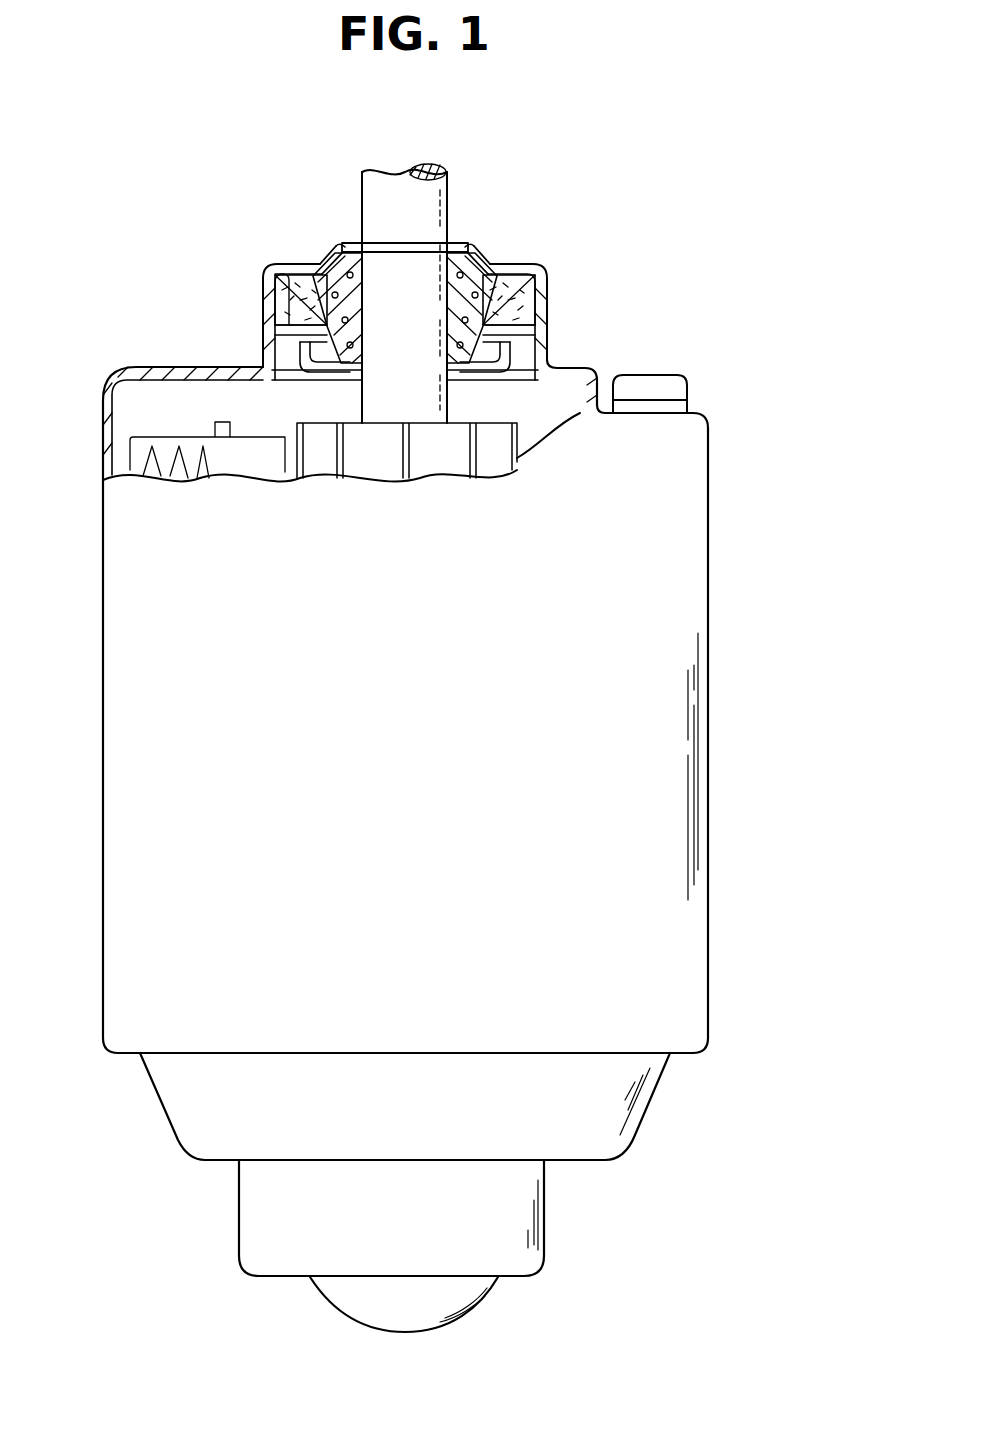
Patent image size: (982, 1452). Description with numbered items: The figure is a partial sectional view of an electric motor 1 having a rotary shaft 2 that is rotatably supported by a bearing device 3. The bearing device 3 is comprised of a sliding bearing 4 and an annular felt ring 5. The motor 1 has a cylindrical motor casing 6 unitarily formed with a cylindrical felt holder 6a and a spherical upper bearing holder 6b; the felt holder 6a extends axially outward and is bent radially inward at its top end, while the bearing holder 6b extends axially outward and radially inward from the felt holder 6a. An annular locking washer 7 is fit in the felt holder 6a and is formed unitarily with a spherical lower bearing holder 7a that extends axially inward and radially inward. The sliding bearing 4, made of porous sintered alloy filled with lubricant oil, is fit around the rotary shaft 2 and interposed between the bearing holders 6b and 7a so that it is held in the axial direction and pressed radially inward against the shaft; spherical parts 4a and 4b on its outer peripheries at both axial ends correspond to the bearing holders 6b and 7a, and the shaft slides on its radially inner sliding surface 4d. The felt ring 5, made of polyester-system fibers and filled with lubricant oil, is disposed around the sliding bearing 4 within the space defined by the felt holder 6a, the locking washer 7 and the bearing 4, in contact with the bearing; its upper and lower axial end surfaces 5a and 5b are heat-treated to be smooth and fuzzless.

The electric motor 1 is at (632, 318).
The rotary shaft 2 is at (378, 180).
The bearing device 3 is at (560, 206).
The sliding bearing 4 is at (477, 257).
The spherical part 4a is at (327, 255).
The spherical part 4b is at (483, 338).
The sliding surface 4d is at (440, 262).
The felt ring 5 is at (518, 290).
The upper axial end surface 5a is at (285, 268).
The lower axial end surface 5b is at (538, 327).
The motor casing 6 is at (103, 415).
The felt holder 6a is at (268, 300).
The spherical bearing holder 6b is at (337, 250).
The locking washer 7 is at (288, 340).
The spherical bearing holder 7a is at (325, 340).